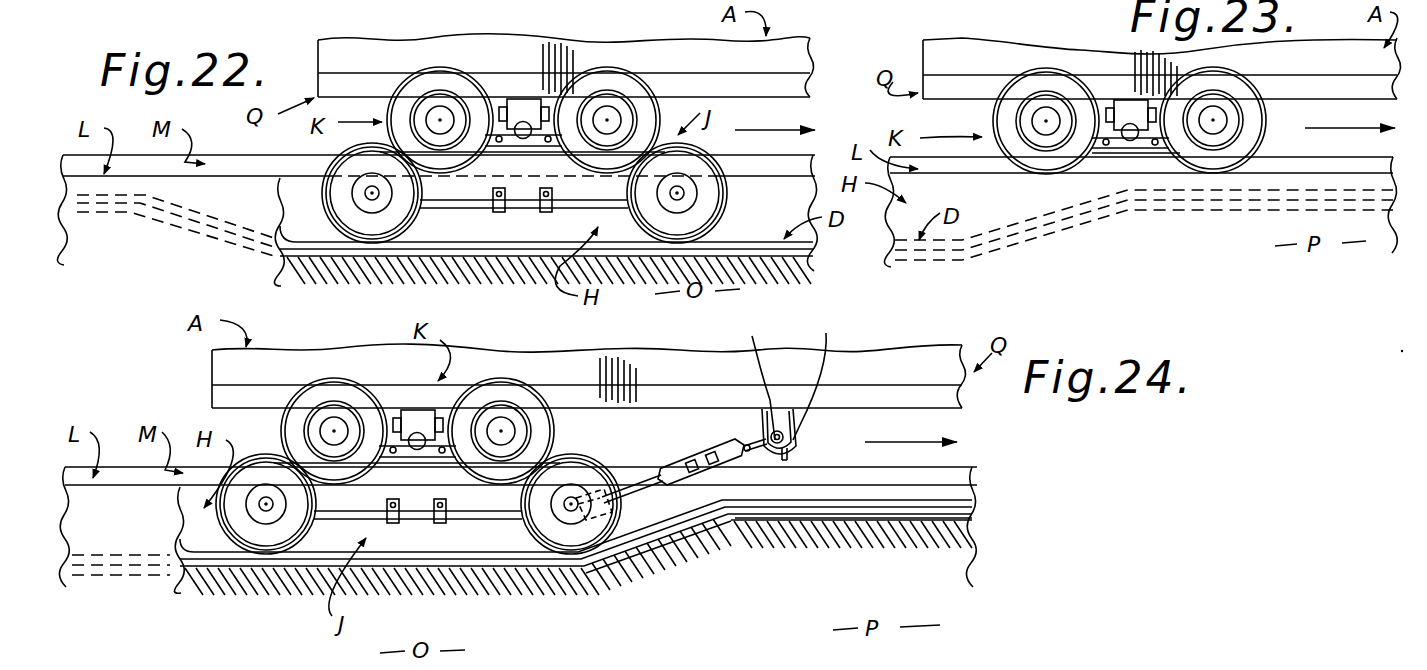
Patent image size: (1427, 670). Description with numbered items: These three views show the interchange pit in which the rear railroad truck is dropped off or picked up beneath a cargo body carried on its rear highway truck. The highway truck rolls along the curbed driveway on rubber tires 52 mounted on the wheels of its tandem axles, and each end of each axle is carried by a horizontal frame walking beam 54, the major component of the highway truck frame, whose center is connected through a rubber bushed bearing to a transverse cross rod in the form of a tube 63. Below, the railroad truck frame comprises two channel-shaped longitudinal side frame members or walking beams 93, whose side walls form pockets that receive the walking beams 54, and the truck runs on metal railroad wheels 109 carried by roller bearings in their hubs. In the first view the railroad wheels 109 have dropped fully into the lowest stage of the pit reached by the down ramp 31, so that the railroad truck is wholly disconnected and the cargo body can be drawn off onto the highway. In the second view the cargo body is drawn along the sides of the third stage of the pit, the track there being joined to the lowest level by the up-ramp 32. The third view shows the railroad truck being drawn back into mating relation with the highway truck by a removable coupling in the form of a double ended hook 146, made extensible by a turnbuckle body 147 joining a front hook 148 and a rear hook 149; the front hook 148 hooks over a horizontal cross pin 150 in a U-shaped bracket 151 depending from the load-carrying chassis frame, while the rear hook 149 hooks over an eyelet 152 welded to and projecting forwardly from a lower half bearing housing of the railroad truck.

In FIG. 22, the rubber tire 52 is at (440, 67).
In FIG. 23, the rubber tire 52 is at (1000, 114).
In FIG. 24, the rubber tire 52 is at (337, 378).
In FIG. 22, the tube 63 is at (522, 122).
In FIG. 23, the tube 63 is at (1130, 123).
In FIG. 24, the tube 63 is at (417, 433).
In FIG. 22, the frame walking beam 54 is at (516, 152).
In FIG. 23, the frame walking beam 54 is at (1143, 162).
In FIG. 24, the frame walking beam 54 is at (404, 466).
In FIG. 22, the longitudinal side frame member 93 is at (529, 212).
In FIG. 24, the longitudinal side frame member 93 is at (484, 514).
In FIG. 22, the railroad wheel 109 is at (322, 191).
In FIG. 24, the railroad wheel 109 is at (246, 546).
In FIG. 22, the down ramp 31 is at (222, 231).
In FIG. 23, the up-ramp 32 is at (1036, 228).
In FIG. 24, the up-ramp 32 is at (702, 536).
In FIG. 24, the double ended hook 146 is at (688, 445).
In FIG. 24, the turnbuckle body 147 is at (734, 456).
In FIG. 24, the front hook 148 is at (796, 446).
In FIG. 24, the rear hook 149 is at (594, 588).
In FIG. 24, the horizontal cross pin 150 is at (752, 336).
In FIG. 24, the U-shaped bracket 151 is at (826, 333).
In FIG. 24, the eyelet 152 is at (683, 572).